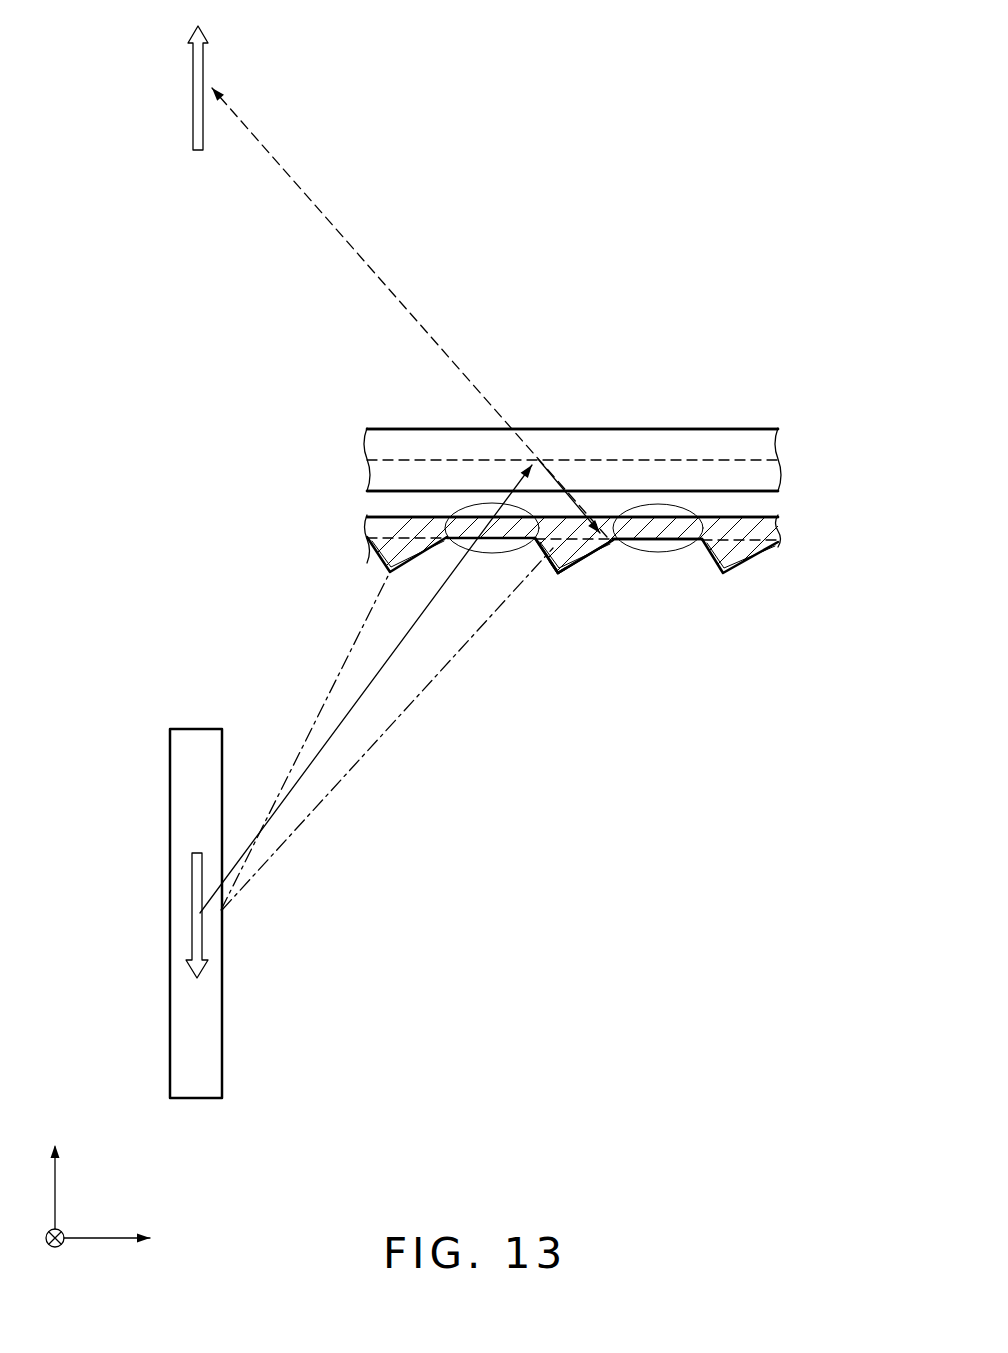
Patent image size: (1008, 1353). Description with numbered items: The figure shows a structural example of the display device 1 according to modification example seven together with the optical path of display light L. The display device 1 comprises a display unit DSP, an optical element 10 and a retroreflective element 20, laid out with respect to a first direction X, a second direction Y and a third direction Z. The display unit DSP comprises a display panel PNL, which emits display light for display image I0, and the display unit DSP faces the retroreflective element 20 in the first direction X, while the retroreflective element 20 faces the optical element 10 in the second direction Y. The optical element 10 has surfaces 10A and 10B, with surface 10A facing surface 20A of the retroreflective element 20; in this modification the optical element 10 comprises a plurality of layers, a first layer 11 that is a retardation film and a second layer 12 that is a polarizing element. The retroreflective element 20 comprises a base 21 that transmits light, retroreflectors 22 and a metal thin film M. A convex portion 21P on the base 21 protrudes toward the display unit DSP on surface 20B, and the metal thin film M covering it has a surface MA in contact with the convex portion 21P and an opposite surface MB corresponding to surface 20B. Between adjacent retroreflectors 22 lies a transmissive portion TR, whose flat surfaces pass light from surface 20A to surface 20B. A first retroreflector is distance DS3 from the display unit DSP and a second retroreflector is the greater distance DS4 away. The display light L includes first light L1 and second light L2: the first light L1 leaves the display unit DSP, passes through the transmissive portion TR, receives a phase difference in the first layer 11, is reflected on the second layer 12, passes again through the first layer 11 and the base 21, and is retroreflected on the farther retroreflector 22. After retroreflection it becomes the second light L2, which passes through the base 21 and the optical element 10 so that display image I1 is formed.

The display device 1 is at (792, 353).
The optical element 10 is at (621, 450).
The surface of optical element 10A is at (747, 497).
The surface of optical element 10B is at (742, 428).
The first layer 11 is at (772, 473).
The second layer 12 is at (773, 445).
The retroreflective element 20 is at (556, 538).
The surface of retroreflective element 20A is at (661, 513).
The surface of retroreflective element 20B is at (683, 545).
The base 21 is at (773, 525).
The convex portion 21P is at (399, 558).
The retroreflector 22 is at (375, 567).
The transmissive portion TR is at (475, 553).
The surface of metal thin film MA is at (525, 512).
The surface of metal thin film MB is at (592, 560).
The metal thin film M is at (552, 570).
The display light L is at (388, 676).
The first light L1 is at (353, 707).
The second light L2 is at (360, 258).
The distance DS3 is at (313, 717).
The distance DS4 is at (343, 782).
The display image I0 is at (192, 885).
The display image I1 is at (192, 72).
The display unit DSP is at (132, 945).
The display panel PNL is at (197, 1098).
The first direction X is at (118, 1239).
The second direction Y is at (55, 1170).
The third direction Z is at (55, 1254).